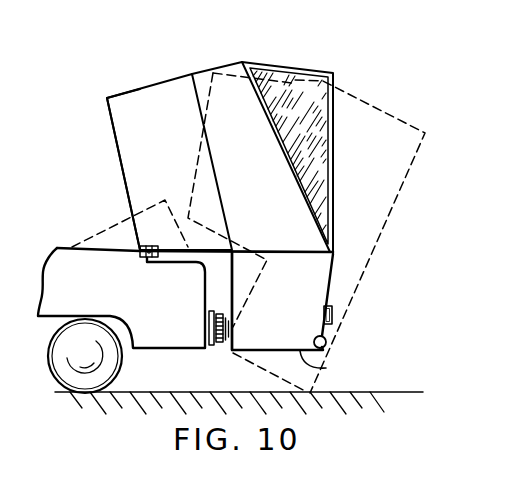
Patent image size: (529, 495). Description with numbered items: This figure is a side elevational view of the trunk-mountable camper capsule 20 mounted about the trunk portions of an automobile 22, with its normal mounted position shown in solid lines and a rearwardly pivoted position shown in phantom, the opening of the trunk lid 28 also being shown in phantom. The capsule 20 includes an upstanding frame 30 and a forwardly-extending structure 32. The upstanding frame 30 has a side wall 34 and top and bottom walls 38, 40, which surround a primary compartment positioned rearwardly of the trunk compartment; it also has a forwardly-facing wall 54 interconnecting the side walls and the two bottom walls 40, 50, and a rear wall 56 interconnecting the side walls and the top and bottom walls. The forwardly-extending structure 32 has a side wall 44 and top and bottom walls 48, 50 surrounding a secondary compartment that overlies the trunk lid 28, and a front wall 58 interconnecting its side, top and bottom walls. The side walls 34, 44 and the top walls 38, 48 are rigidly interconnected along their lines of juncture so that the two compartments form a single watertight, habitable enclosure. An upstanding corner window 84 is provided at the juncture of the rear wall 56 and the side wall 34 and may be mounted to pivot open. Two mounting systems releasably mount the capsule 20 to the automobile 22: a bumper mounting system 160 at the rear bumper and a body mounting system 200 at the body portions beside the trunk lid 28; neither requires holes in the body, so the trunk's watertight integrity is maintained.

The camper capsule 20 is at (327, 51).
The automobile 22 is at (68, 246).
The trunk lid 28 is at (117, 222).
The upstanding frame 30 is at (339, 282).
The forwardly-extending structure 32 is at (145, 84).
The side wall 34 is at (284, 230).
The top wall 38 is at (229, 63).
The bottom wall 40 is at (326, 368).
The side wall 44 is at (167, 160).
The top wall 48 is at (125, 94).
The bottom wall 50 is at (157, 252).
The forwardly-facing wall 54 is at (230, 286).
The rear wall 56 is at (333, 350).
The front wall 58 is at (116, 140).
The corner window 84 is at (317, 128).
The bumper mounting system 160 is at (218, 357).
The body mounting system 200 is at (138, 253).